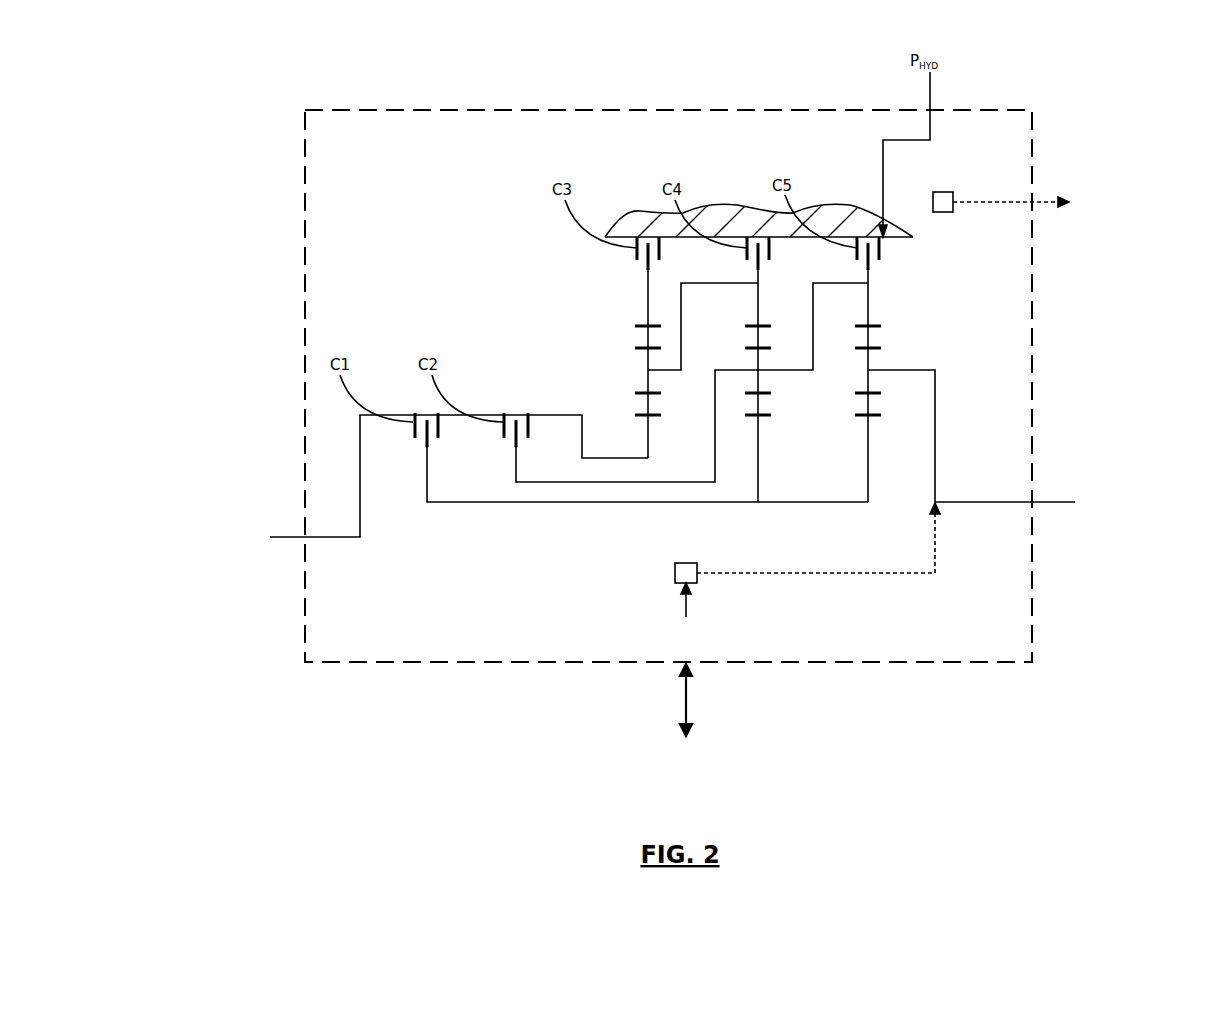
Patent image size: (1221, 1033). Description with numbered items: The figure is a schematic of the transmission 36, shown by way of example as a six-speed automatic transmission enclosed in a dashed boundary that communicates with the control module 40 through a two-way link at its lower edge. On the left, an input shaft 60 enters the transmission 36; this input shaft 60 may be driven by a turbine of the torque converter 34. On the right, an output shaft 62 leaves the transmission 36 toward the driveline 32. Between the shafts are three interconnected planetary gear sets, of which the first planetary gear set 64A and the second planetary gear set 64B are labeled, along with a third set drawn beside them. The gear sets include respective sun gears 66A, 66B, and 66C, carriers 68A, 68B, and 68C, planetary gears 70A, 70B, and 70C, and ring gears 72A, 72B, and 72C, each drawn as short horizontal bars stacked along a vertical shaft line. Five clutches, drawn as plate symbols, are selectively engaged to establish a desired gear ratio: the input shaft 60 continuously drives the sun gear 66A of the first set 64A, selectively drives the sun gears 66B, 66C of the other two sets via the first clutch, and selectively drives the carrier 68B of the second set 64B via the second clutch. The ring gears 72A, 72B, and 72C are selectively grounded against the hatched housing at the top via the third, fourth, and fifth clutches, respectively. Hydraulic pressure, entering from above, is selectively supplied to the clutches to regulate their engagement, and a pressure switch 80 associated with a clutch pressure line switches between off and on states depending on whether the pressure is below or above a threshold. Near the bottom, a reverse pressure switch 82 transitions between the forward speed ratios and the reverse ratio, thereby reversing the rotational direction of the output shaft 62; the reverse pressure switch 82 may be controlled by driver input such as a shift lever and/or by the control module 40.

The transmission 36 is at (668, 100).
The input shaft 60 is at (330, 537).
The torque converter 34 is at (214, 538).
The output shaft 62 is at (960, 502).
The driveline 32 is at (1140, 501).
The first planetary gear set 64A is at (607, 358).
The second planetary gear set 64B is at (839, 384).
The sun gear 66A is at (637, 416).
The sun gear 66B is at (765, 417).
The sun gear 66C is at (878, 417).
The carrier 68A is at (675, 372).
The carrier 68B is at (798, 370).
The carrier 68C is at (905, 370).
The planetary gears 70A is at (647, 375).
The planetary gears 70B is at (757, 360).
The planetary gears 70C is at (873, 360).
The ring gear 72A is at (643, 325).
The ring gear 72B is at (757, 325).
The ring gear 72C is at (872, 323).
The pressure switch 80 is at (943, 192).
The reverse pressure switch 82 is at (675, 573).
The control module 40 is at (674, 714).